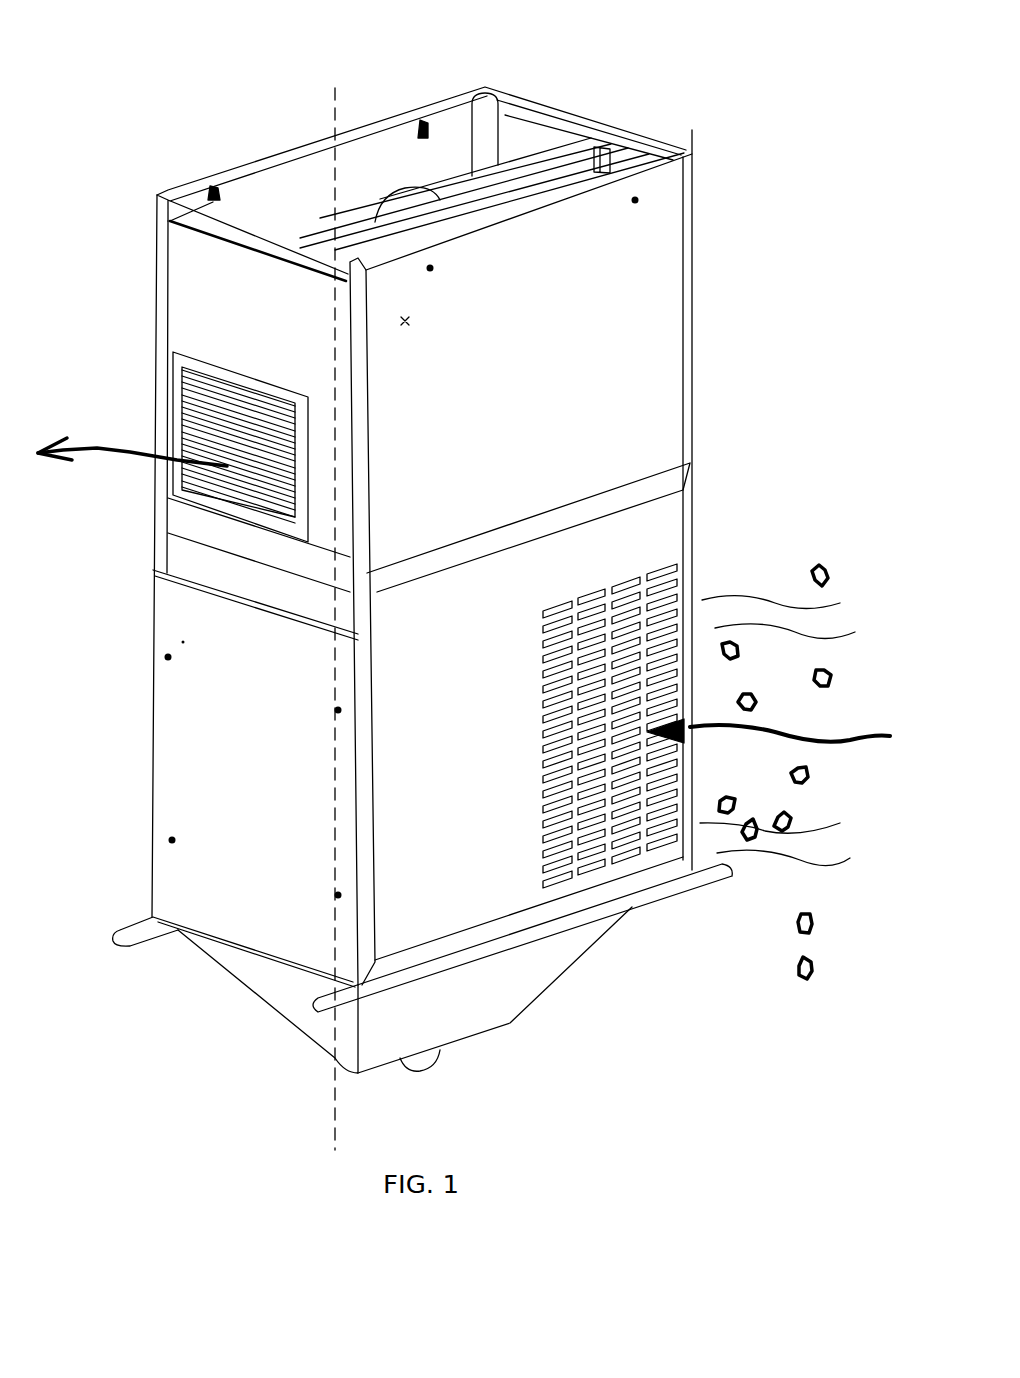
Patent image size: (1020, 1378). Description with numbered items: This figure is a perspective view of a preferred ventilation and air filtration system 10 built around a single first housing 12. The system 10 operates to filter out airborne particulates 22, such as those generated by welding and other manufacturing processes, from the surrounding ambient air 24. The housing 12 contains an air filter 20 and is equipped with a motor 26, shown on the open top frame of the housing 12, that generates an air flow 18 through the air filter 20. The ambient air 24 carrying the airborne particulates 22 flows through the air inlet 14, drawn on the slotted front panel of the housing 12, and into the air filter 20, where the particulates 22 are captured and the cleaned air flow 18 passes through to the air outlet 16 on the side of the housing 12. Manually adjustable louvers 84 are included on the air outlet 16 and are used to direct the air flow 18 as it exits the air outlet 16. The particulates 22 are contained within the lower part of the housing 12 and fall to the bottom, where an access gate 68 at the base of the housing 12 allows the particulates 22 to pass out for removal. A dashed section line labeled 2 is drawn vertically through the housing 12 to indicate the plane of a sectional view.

The section line 2- 2 is at (335, 88).
The ventilation and air filtration system 10 is at (172, 58).
The first housing 12 is at (680, 178).
The air inlet 14 is at (690, 578).
The air outlet 16 is at (183, 420).
The air flow 18 is at (108, 457).
The air filter 20 is at (550, 640).
The airborne particulates 22 is at (803, 960).
The ambient air 24 is at (762, 600).
The motor 26 is at (413, 193).
The access gate 68 is at (432, 1057).
The louvers 84 is at (237, 400).